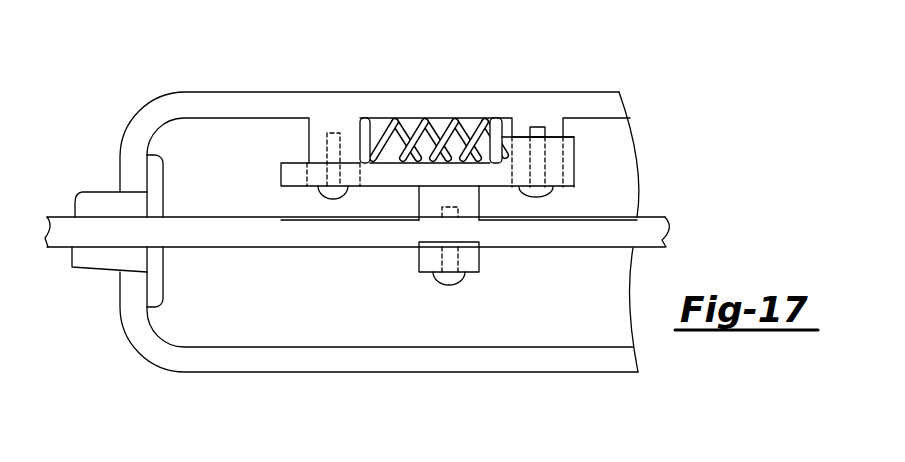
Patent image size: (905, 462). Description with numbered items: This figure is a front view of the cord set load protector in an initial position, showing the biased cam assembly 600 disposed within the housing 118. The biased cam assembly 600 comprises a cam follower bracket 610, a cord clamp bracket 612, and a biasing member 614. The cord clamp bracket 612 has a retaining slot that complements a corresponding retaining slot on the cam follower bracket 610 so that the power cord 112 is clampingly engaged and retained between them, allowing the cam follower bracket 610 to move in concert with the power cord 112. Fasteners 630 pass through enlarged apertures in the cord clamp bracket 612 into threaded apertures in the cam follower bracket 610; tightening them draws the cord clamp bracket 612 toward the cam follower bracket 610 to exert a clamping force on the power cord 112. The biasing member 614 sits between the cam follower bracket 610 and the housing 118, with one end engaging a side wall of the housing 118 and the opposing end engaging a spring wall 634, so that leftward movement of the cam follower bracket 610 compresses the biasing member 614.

The biased cam assembly 600 is at (266, 60).
The housing 118 is at (572, 97).
The power cord 112 is at (652, 216).
The biasing member 614 is at (398, 118).
The spring wall 634 is at (500, 143).
The cam follower bracket 610 is at (571, 156).
The cord clamp bracket 612 is at (480, 262).
The fasteners 630 is at (445, 281).